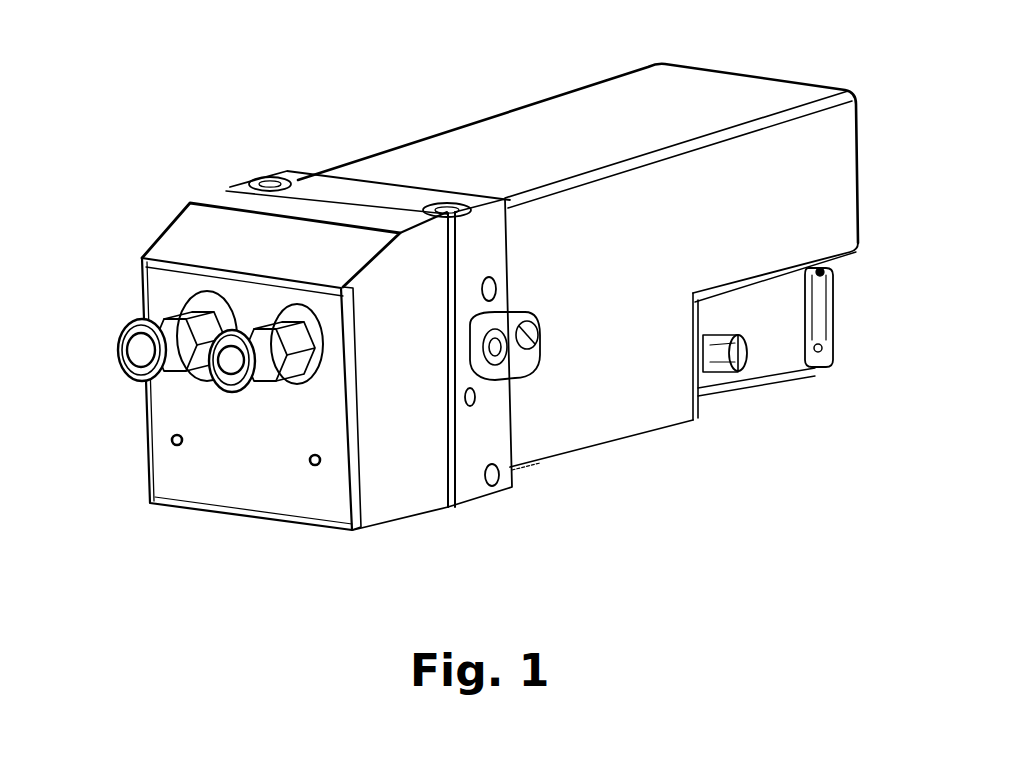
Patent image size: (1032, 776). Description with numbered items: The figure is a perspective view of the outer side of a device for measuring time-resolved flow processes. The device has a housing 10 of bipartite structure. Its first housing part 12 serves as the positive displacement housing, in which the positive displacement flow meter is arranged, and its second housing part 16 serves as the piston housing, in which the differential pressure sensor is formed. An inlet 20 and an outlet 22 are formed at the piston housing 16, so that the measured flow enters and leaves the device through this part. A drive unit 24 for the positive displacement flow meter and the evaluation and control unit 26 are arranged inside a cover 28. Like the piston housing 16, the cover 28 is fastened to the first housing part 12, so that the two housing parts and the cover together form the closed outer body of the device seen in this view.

The housing 10 is at (225, 172).
The first housing part 12 is at (324, 187).
The second housing part 16 is at (236, 204).
The inlet 20 is at (228, 386).
The outlet 22 is at (136, 351).
The drive unit 24 is at (488, 182).
The evaluation and control unit 26 is at (735, 390).
The cover 28 is at (830, 128).